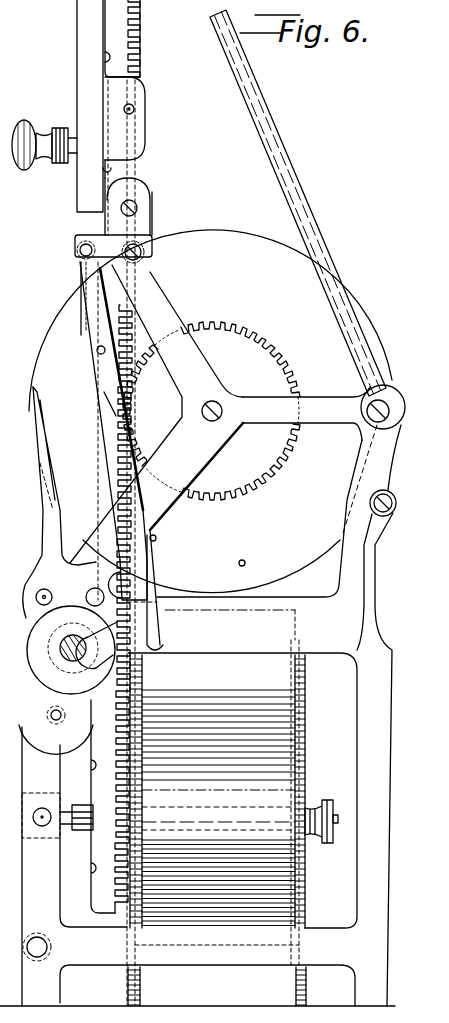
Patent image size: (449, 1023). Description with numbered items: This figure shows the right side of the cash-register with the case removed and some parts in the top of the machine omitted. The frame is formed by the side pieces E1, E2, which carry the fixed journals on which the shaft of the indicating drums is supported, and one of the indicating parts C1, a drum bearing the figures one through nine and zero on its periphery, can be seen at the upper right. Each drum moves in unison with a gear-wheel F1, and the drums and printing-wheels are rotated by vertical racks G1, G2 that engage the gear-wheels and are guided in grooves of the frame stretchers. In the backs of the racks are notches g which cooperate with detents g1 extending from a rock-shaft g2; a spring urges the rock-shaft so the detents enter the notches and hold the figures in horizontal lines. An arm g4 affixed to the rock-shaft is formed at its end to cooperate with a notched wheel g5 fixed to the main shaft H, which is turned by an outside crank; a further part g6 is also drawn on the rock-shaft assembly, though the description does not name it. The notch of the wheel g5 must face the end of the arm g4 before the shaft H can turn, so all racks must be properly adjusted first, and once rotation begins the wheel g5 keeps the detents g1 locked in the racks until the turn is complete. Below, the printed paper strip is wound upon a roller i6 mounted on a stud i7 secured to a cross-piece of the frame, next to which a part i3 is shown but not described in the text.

The rack G1 is at (141, 50).
The rock-shaft g2 is at (74, 254).
The side piece E2 is at (168, 294).
The gear-wheel F1 is at (262, 344).
The indicating part C1 is at (359, 308).
The detent g1 is at (90, 322).
The pawl stud g6 is at (97, 349).
The arm g4 is at (110, 403).
The notch g is at (100, 439).
The notched wheel g5 is at (58, 650).
The shaft H is at (84, 546).
The roller i6 is at (318, 740).
The spindle head i3 is at (326, 803).
The stud i7 is at (338, 820).
The side piece E1 is at (66, 832).
The rack G2 is at (94, 876).